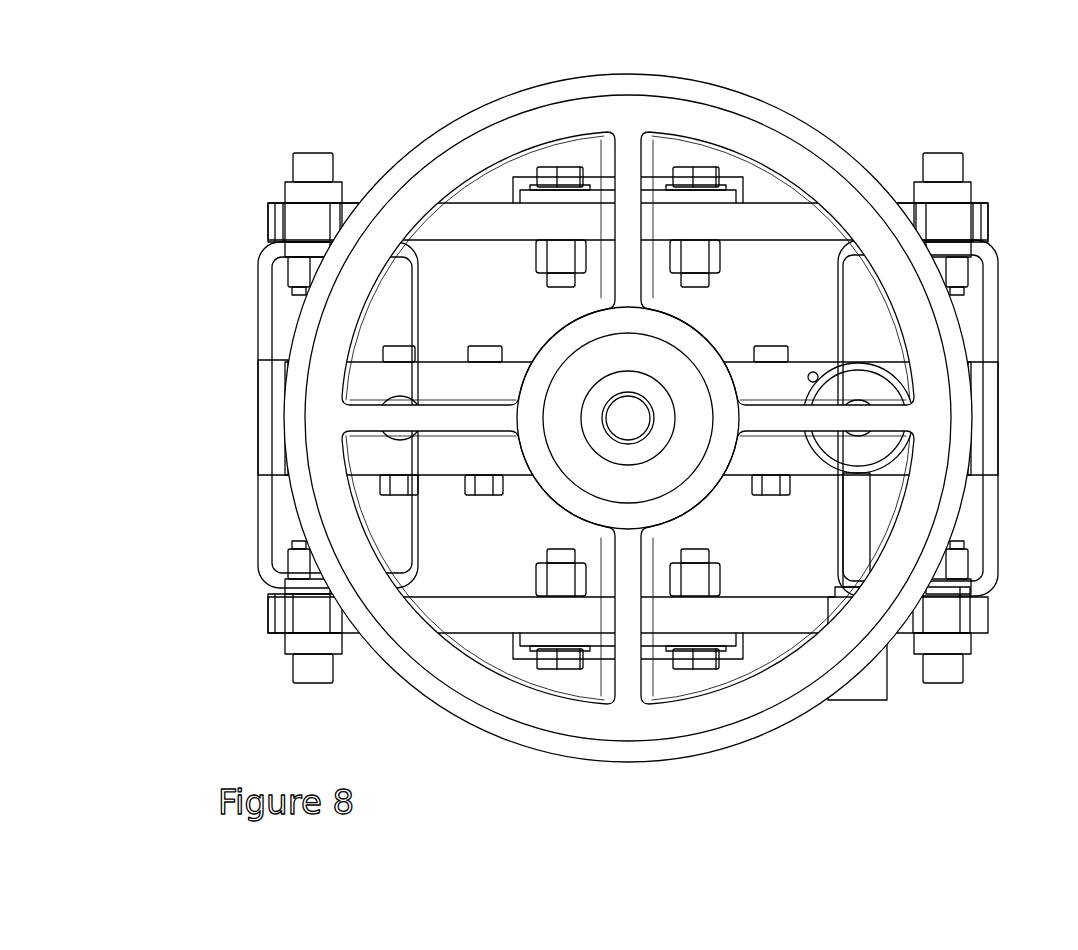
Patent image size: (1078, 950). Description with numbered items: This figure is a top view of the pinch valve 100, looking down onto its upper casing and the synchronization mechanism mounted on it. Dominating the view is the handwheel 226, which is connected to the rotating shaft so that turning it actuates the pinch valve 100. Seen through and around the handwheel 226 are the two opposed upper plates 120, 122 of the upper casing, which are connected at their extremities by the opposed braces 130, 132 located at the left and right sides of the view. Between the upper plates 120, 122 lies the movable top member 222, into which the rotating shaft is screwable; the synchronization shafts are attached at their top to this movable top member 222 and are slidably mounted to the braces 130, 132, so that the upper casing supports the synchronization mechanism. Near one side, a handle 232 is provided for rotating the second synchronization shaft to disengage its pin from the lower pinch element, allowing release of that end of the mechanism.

The pinch valve 100 is at (246, 97).
The upper plate 120 is at (481, 222).
The upper plate 122 is at (466, 618).
The brace 130 is at (273, 415).
The brace 132 is at (990, 329).
The movable top member 222 is at (441, 360).
The handwheel 226 is at (838, 158).
The handle 232 is at (874, 689).